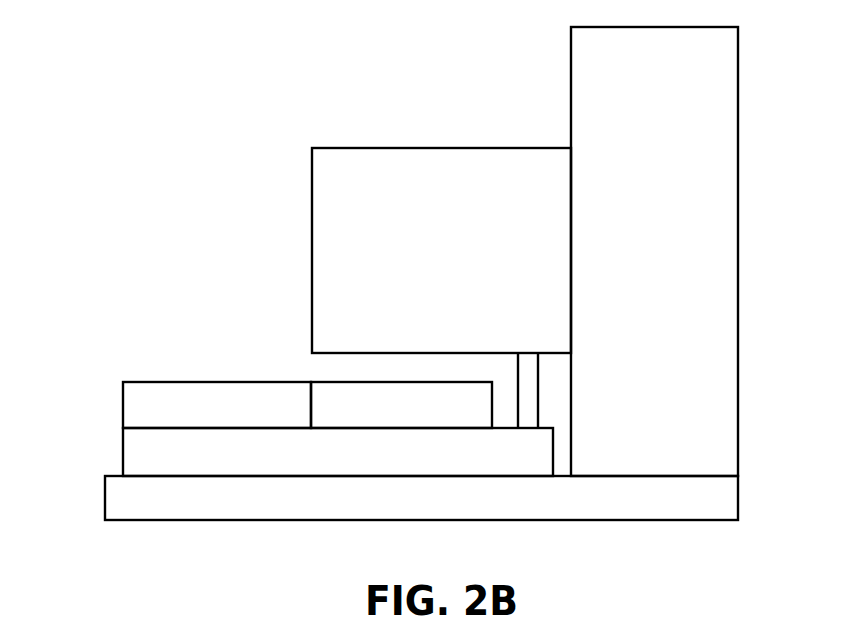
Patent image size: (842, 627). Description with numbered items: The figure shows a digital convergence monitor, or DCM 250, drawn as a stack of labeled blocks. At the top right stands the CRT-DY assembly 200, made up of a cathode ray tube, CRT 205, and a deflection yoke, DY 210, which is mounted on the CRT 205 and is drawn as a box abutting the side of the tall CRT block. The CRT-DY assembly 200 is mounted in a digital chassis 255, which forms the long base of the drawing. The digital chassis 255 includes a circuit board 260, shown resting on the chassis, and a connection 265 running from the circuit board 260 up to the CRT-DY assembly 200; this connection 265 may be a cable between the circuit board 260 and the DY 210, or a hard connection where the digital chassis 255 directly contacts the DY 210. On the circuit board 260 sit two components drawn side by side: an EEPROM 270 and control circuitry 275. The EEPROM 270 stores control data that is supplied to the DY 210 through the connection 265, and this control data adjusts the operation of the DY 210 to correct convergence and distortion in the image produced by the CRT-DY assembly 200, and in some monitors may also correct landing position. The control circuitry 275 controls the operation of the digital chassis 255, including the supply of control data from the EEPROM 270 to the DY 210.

The CRT-DY assembly 200 is at (522, 134).
The cathode ray tube 205 is at (738, 74).
The deflection yoke 210 is at (312, 217).
The digital convergence monitor 250 is at (166, 127).
The digital chassis 255 is at (105, 508).
The circuit board 260 is at (123, 452).
The connection 265 is at (538, 410).
The EEPROM 270 is at (123, 395).
The control circuitry 275 is at (330, 381).